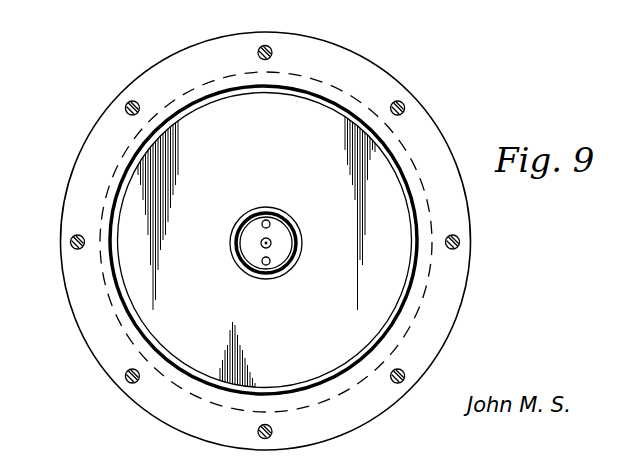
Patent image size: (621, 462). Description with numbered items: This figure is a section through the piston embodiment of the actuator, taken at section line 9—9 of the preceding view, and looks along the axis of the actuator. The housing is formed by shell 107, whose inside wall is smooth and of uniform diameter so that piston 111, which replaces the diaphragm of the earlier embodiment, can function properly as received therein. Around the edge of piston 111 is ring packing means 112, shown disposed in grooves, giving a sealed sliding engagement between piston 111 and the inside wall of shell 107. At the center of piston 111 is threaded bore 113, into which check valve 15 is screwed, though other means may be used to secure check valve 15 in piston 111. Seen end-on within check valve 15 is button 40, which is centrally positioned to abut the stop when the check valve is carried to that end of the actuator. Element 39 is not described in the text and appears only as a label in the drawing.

The shell 107 is at (83, 146).
The section line 9— 9 is at (72, 245).
The ring packing means 112 is at (308, 390).
The piston 111 is at (324, 307).
The threaded bore 113 is at (247, 216).
The check valve 15 is at (278, 219).
The button 40 is at (272, 243).
The hub 39 is at (251, 273).